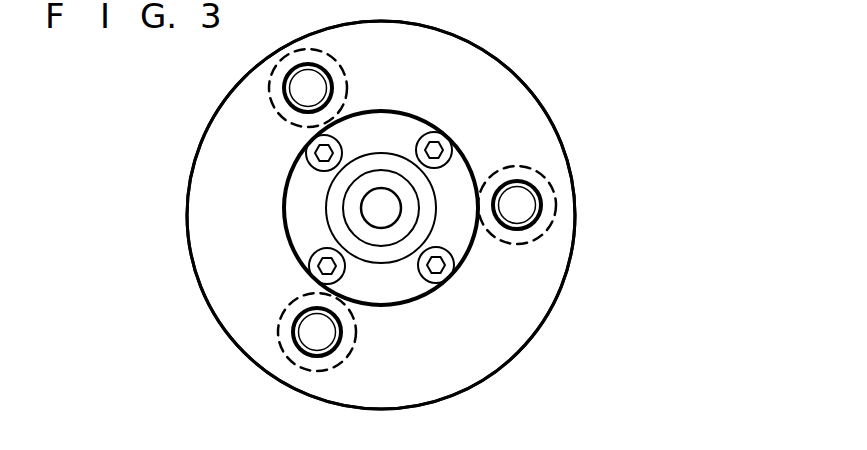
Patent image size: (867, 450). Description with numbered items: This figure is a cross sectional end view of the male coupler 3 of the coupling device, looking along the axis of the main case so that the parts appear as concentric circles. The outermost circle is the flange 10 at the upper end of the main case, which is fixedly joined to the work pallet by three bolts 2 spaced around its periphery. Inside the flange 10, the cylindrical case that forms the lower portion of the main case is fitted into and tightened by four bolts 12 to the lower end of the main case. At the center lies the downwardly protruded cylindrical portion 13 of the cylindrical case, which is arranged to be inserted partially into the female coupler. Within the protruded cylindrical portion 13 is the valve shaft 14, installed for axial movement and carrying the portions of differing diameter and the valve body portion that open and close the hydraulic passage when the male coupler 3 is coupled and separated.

The bolts 2 is at (317, 347).
The male coupler 3 is at (618, 97).
The flange 10 is at (480, 362).
The bolts 12 is at (443, 138).
The protruded cylindrical portion 13 is at (412, 222).
The valve shaft 14 is at (382, 198).